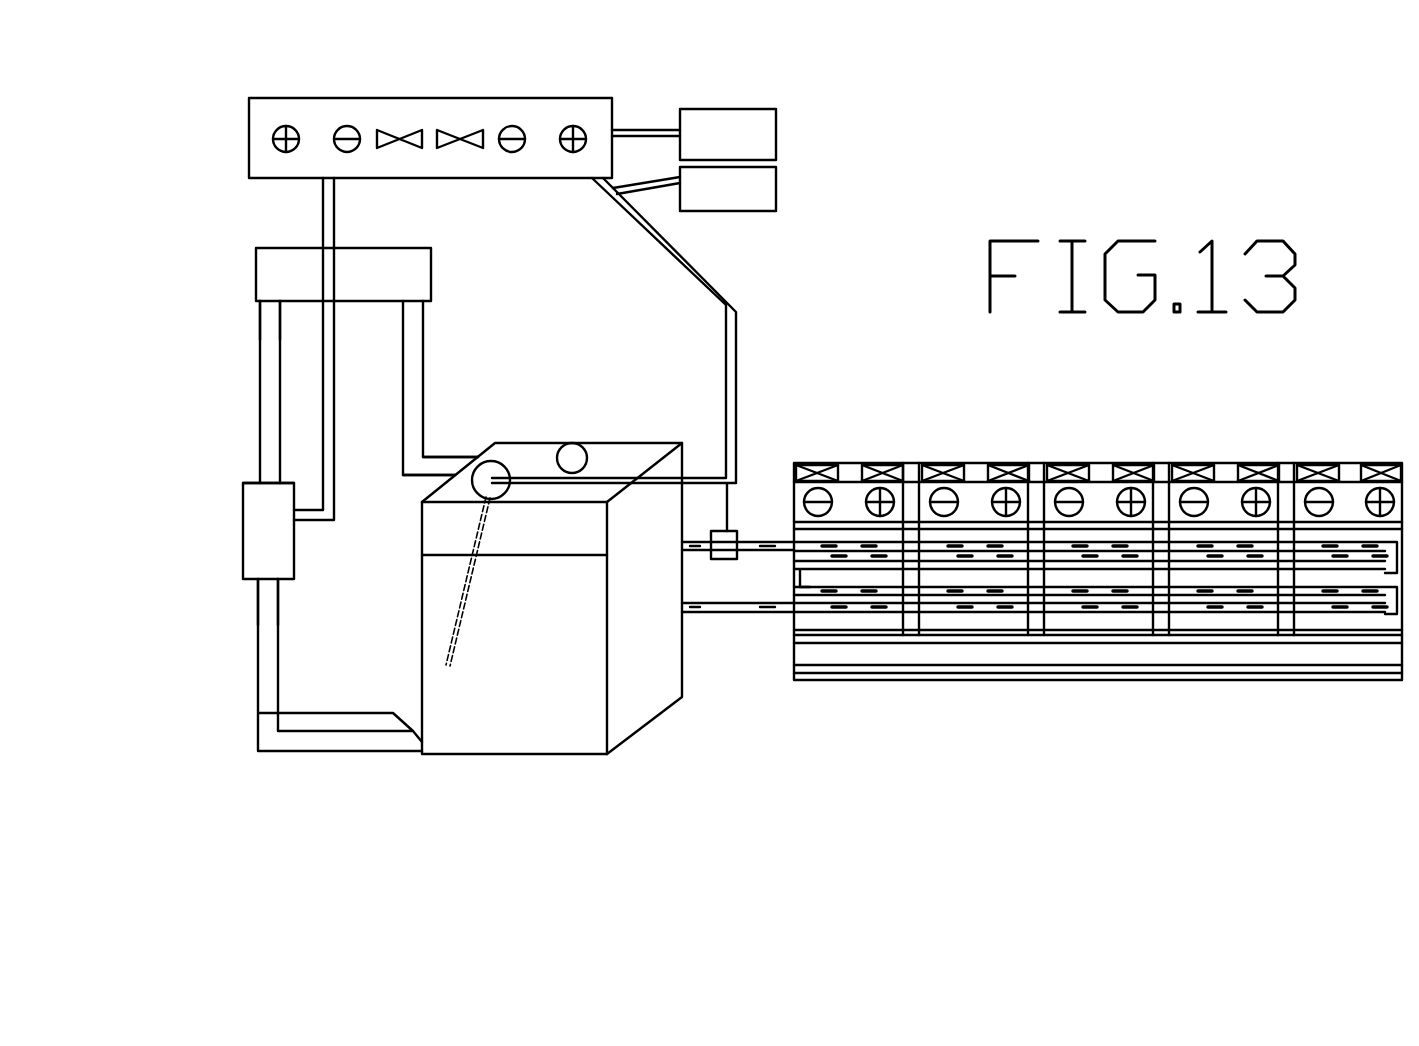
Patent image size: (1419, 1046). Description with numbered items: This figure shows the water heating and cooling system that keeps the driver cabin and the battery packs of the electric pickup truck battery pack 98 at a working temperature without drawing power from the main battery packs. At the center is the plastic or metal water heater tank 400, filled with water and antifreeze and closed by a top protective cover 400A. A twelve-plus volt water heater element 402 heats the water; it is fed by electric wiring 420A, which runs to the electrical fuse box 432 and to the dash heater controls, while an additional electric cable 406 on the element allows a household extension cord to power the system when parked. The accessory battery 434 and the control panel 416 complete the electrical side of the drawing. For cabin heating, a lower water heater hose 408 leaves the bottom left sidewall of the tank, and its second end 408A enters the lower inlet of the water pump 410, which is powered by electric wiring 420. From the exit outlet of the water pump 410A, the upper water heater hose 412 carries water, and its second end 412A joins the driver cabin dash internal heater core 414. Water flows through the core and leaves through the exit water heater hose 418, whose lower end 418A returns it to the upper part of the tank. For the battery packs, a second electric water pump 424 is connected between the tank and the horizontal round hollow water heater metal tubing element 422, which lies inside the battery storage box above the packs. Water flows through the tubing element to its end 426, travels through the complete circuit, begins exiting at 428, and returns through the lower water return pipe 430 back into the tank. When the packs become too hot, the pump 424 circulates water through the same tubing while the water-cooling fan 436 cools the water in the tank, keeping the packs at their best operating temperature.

The electric pickup truck battery pack 98 is at (1228, 650).
The plastic or metal water heater tank 400 is at (628, 690).
The top protective cover 400A is at (613, 445).
The water heater element 402 is at (498, 470).
The electric cable 406 is at (472, 603).
The lower water heater hose 408 is at (258, 713).
The second end of lower water heater hose 408A is at (268, 592).
The water pump 410 is at (265, 576).
The exit outlet of the water pump 410A is at (258, 487).
The upper water heater hose 412 is at (270, 473).
The second end of upper water heater hose 412A is at (270, 303).
The driver cabin dash internal heater core 414 is at (267, 260).
The control panel 416 is at (260, 155).
The exit water heater hose 418 is at (420, 323).
The lower end of water heater hose 418A is at (452, 473).
The electric wiring 420 is at (327, 407).
The electric wiring 420A is at (720, 290).
The horizontal round hollow water heater metal tubing element 422 is at (737, 540).
The electric water pump 424 is at (712, 607).
The end of pipe 426 is at (1360, 547).
The exit of tubing element 428 is at (1373, 608).
The lower water return pipe 430 is at (728, 558).
The electrical fuse box 432 is at (776, 132).
The accessory battery 434 is at (776, 195).
The water-cooling fan 436 is at (572, 475).